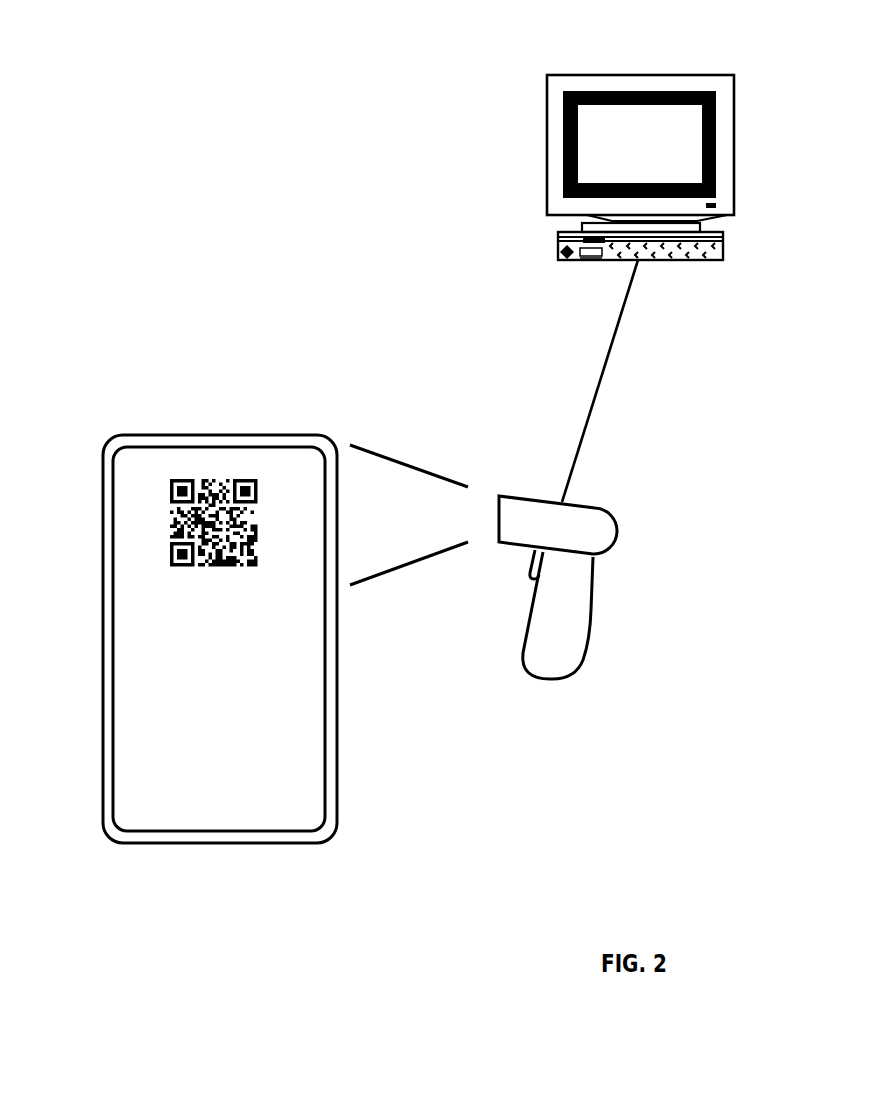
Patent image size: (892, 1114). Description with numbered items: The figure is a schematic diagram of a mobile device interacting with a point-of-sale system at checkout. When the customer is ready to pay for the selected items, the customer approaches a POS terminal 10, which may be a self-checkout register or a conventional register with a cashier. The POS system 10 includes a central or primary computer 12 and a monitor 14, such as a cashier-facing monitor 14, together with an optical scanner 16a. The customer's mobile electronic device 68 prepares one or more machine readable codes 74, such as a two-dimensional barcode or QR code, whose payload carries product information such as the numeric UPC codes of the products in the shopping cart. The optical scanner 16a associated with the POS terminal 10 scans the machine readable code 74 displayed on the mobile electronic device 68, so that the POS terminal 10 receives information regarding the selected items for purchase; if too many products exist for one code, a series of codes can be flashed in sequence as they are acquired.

The POS terminal 10 is at (741, 38).
The central or primary computer 12 is at (732, 244).
The monitor 14 is at (532, 116).
The optical scanner 16a is at (577, 530).
The mobile electronic device 68 is at (183, 639).
The machine readable code 74 is at (147, 502).